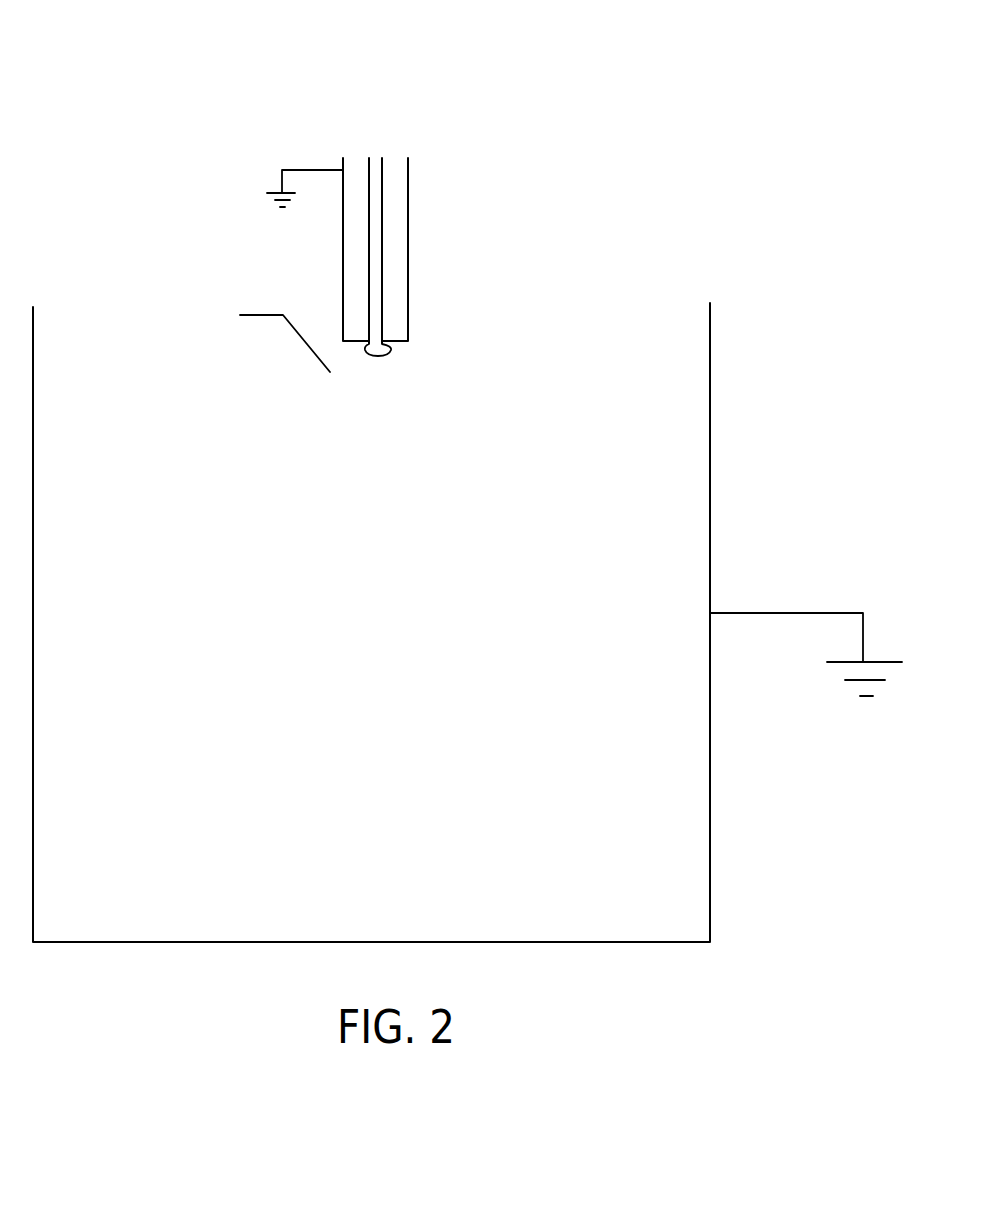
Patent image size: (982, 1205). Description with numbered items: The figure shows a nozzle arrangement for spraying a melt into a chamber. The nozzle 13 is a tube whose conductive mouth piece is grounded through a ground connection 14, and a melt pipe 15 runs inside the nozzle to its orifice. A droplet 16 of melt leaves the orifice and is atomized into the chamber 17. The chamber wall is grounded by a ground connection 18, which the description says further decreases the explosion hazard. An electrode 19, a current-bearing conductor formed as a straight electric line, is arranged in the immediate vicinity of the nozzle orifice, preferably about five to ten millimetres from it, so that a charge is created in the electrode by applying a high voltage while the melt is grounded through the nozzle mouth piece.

The outer tube / nozzle 13 is at (408, 165).
The grounded electrode connection 14 is at (308, 167).
The inner capillary tube 15 is at (375, 262).
The droplet 16 is at (368, 350).
The container / vessel 17 is at (710, 418).
The ground connection of container 18 is at (755, 612).
The deflector / collector plate 19 is at (260, 315).